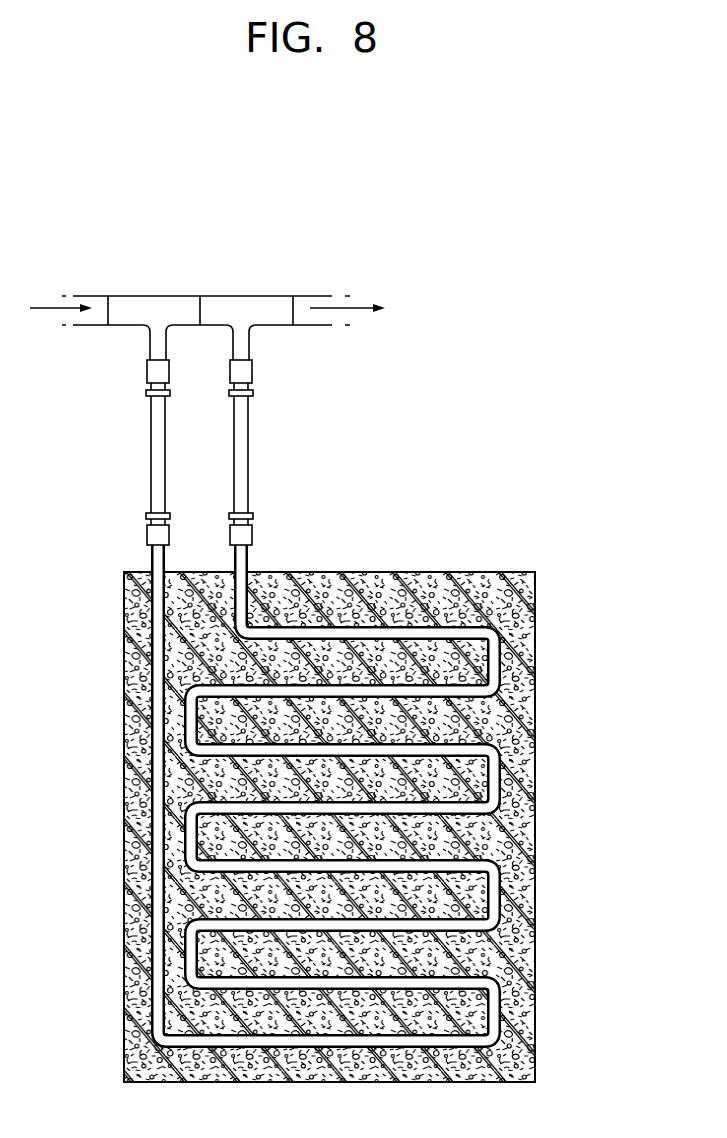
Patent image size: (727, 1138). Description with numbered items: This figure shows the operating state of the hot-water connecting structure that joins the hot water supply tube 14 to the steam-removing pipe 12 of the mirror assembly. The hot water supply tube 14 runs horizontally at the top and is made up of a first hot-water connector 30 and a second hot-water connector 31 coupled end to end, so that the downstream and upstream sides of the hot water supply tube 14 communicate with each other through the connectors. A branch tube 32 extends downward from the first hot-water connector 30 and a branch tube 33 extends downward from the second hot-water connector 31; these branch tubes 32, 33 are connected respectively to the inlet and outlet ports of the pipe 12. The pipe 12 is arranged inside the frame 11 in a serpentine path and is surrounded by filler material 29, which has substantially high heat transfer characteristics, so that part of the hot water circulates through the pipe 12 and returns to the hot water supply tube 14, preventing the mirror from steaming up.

The frame 11 is at (494, 569).
The pipe 12 is at (497, 658).
The hot water supply tube 14 is at (92, 298).
The filler material 29 is at (527, 812).
The first hot-water connector 30 is at (157, 312).
The second hot-water connector 31 is at (242, 303).
The branch tube 32 is at (156, 350).
The branch tube 33 is at (250, 348).